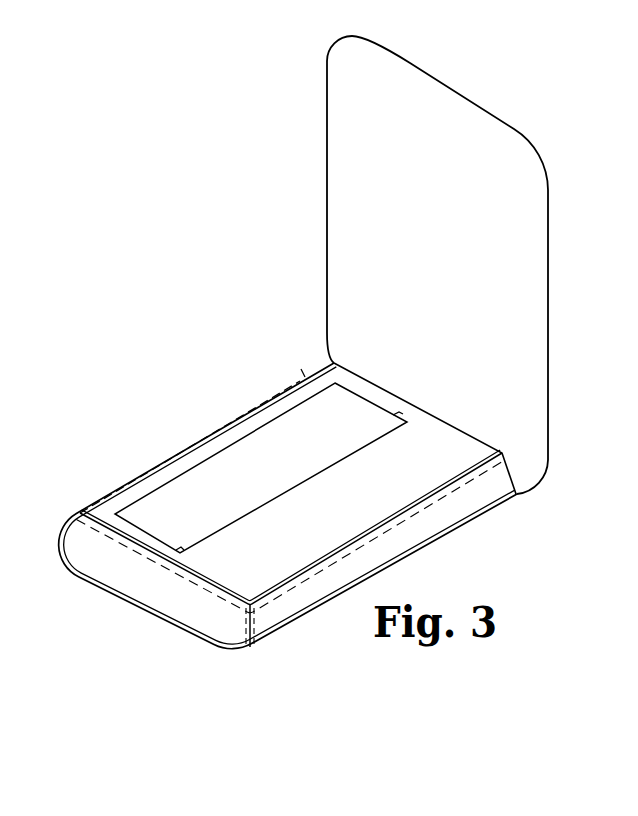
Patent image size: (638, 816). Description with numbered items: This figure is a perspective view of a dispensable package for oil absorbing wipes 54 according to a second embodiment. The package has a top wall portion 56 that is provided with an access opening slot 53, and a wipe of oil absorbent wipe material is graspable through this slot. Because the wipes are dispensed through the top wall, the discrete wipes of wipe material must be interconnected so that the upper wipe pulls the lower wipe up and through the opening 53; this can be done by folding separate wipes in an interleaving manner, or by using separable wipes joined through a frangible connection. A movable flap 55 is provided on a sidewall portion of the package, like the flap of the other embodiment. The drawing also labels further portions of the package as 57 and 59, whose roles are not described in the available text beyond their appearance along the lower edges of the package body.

The access opening slot 53 is at (178, 553).
The oil absorbing wipes 54 is at (272, 421).
The movable flap 55 is at (538, 304).
The top wall portion 56 is at (452, 442).
The rim flange 57 is at (95, 558).
The bottom edge of base 59 is at (453, 537).